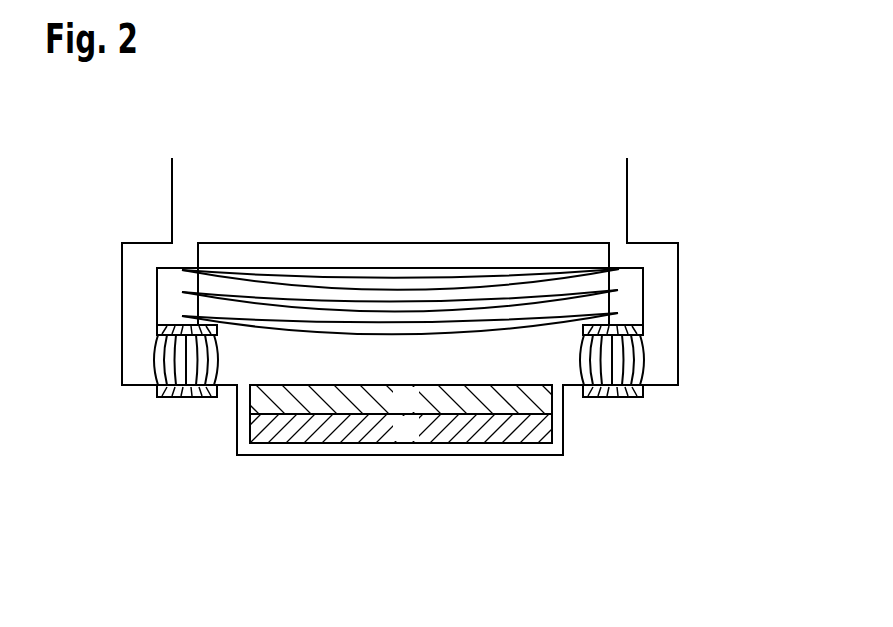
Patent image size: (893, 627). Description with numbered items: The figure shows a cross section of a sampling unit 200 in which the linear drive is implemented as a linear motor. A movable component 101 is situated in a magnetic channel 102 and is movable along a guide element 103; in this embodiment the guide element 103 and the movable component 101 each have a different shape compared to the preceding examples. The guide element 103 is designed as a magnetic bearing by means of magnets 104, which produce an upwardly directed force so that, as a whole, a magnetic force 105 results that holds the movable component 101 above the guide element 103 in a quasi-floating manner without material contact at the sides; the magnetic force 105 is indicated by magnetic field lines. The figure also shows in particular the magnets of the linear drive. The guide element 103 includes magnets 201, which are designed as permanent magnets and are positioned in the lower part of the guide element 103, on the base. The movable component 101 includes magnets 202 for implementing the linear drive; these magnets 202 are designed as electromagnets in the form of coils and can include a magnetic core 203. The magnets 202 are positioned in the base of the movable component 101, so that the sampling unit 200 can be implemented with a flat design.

The sampling unit 200 is at (130, 145).
The movable component 101 is at (313, 243).
The magnetic channel 102 is at (658, 278).
The guide element 103 is at (678, 250).
The magnets 104 is at (157, 332).
The magnetic force 105 is at (158, 358).
The magnets 201 is at (327, 443).
The magnets 202 is at (382, 285).
The magnetic core 203 is at (448, 265).